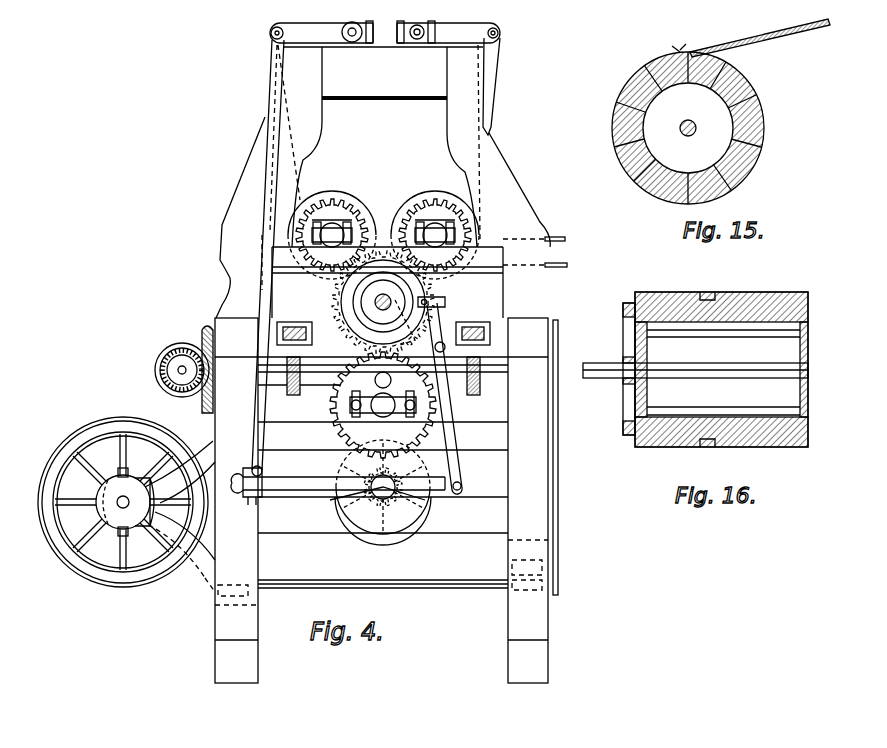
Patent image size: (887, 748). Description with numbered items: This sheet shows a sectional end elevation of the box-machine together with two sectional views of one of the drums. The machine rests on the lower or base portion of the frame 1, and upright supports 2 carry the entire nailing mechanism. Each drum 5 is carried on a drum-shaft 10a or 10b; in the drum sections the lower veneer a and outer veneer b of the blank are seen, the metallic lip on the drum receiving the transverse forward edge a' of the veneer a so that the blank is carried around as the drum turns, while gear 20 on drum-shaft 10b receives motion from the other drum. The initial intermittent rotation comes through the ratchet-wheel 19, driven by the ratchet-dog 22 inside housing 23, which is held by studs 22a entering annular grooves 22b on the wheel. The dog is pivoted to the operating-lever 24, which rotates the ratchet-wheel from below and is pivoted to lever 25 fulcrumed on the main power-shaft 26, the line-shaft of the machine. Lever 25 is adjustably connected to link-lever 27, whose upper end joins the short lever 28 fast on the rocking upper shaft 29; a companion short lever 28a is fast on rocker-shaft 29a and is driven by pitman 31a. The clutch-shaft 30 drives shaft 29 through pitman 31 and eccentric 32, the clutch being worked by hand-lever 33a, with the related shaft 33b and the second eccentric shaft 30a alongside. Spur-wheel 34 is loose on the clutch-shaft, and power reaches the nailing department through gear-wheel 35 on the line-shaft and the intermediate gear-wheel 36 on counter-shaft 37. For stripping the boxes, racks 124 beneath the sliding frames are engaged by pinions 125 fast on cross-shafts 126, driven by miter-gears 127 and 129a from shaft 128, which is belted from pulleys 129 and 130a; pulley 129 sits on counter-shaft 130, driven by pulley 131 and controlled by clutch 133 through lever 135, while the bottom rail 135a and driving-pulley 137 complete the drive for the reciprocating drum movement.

In FIG. 4, the base portion of the frame 1 is at (381, 465).
In FIG. 4, the upright supports 2 is at (383, 217).
In FIG. 15, the drum 5 is at (765, 112).
In FIG. 16, the drum 5 is at (742, 292).
In FIG. 4, the drum-shaft 10a is at (384, 312).
In FIG. 15, the drum-shaft 10b is at (688, 120).
In FIG. 16, the drum-shaft 10b is at (695, 361).
In FIG. 4, the ratchet-wheel 19 is at (432, 296).
In FIG. 16, the gear 20 is at (625, 338).
In FIG. 4, the ratchet-dog 22 is at (437, 308).
In FIG. 4, the studs 22a is at (386, 302).
In FIG. 4, the annular grooves 22b is at (383, 302).
In FIG. 4, the housing 23 is at (446, 304).
In FIG. 4, the operating-lever 24 is at (452, 412).
In FIG. 4, the lever 25 is at (293, 488).
In FIG. 4, the main power-shaft 26 is at (355, 500).
In FIG. 4, the link-lever 27 is at (265, 135).
In FIG. 4, the short lever 28 is at (448, 32).
In FIG. 4, the top bar 28a is at (321, 32).
In FIG. 4, the upper shaft 29 is at (351, 42).
In FIG. 4, the rocker-shaft 29a is at (417, 40).
In FIG. 4, the clutch-shaft 30 is at (337, 236).
In FIG. 4, the shaft 30a is at (440, 230).
In FIG. 4, the pitman 31 is at (300, 187).
In FIG. 4, the pitman 31a is at (490, 81).
In FIG. 4, the eccentric 32 is at (356, 204).
In FIG. 4, the hand-lever 33a is at (567, 266).
In FIG. 4, the shaft 33b is at (565, 240).
In FIG. 4, the spur-wheel 34 is at (383, 228).
In FIG. 4, the gear-wheel 35 is at (393, 483).
In FIG. 4, the intermediate gear-wheel 36 is at (383, 405).
In FIG. 4, the counter-shaft 37 is at (376, 398).
In FIG. 4, the racks 124 is at (300, 311).
In FIG. 4, the pinions 125 is at (293, 395).
In FIG. 4, the cross-shafts 126 is at (299, 385).
In FIG. 4, the miter-gear 127 is at (207, 325).
In FIG. 4, the shaft 128 is at (180, 370).
In FIG. 4, the pulley 129 is at (160, 580).
In FIG. 4, the miter-gear 129a is at (170, 348).
In FIG. 4, the counter-shaft 130 is at (118, 506).
In FIG. 4, the pulley 130a is at (160, 377).
In FIG. 4, the pulley 131 is at (128, 572).
In FIG. 4, the clutch 133 is at (112, 490).
In FIG. 4, the lever 135 is at (568, 452).
In FIG. 4, the bottom rail 135a is at (455, 588).
In FIG. 4, the main driving-pulley 137 is at (397, 537).
In FIG. 15, the veneer a is at (756, 57).
In FIG. 15, the transverse forward edge a' is at (679, 36).
In FIG. 15, the veneer b is at (760, 32).